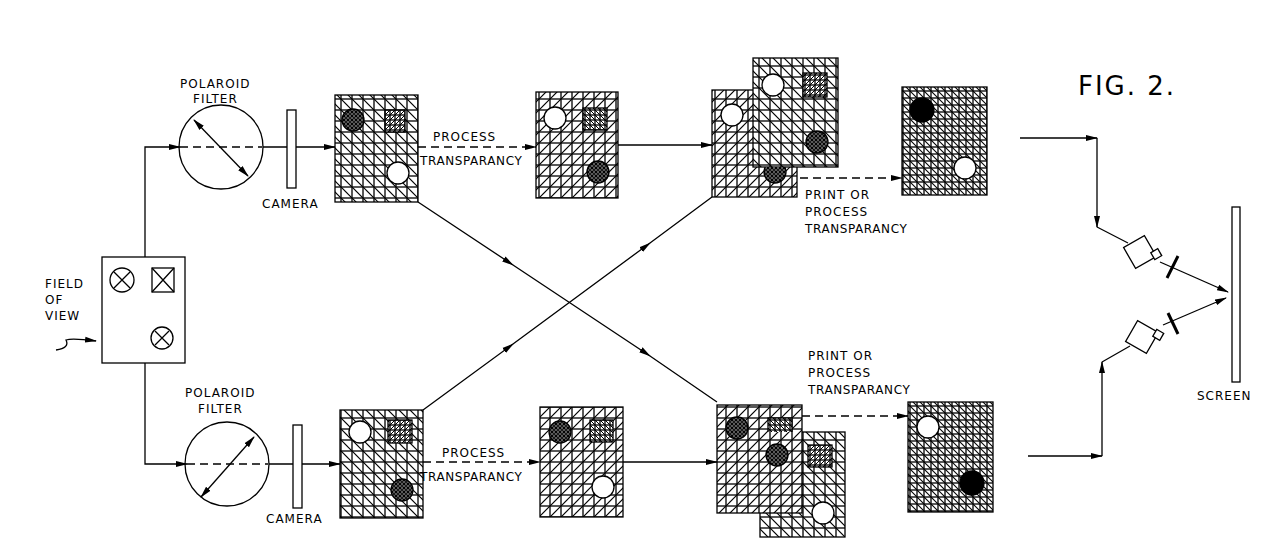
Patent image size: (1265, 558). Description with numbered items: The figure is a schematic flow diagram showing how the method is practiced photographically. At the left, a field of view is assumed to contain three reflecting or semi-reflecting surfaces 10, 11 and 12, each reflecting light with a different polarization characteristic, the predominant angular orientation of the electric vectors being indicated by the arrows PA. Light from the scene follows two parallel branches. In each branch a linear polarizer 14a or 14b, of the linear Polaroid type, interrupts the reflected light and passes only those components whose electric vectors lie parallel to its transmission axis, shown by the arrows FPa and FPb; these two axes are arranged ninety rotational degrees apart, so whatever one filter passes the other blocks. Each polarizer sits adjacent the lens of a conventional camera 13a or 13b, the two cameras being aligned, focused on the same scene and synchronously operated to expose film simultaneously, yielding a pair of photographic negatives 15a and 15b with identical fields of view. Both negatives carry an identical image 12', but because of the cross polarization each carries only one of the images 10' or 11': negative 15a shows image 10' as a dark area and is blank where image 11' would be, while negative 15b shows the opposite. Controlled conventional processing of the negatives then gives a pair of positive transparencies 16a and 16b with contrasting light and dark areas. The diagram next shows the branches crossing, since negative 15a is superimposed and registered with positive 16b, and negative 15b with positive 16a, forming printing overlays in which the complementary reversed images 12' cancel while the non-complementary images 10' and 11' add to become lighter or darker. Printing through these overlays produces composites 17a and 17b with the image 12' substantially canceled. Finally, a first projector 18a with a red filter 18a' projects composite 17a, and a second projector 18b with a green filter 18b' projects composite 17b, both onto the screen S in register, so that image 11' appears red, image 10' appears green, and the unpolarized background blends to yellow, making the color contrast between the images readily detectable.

The reflecting surface 10 is at (142, 293).
The reflecting surface 11 is at (183, 328).
The reflecting surface 12 is at (184, 278).
The predominant axis of polarization arrows PA is at (152, 336).
The axis of polarization of polarizer 14a FPa is at (181, 135).
The axis of polarization of polarizer 14b FPb is at (188, 492).
The camera 13a is at (291, 110).
The camera 13b is at (298, 425).
The linear polarizer 14a is at (212, 180).
The linear polarizer 14b is at (221, 498).
The photographic negative 15a is at (363, 200).
The photographic negative 15b is at (384, 412).
The positive transparency 16a is at (555, 176).
The positive transparency 16b is at (557, 493).
The composite 17a is at (965, 125).
The composite 17b is at (975, 432).
The first projector 18a is at (1173, 246).
The second projector 18b is at (1151, 327).
The red filter 18a' is at (1187, 253).
The green filter 18b' is at (1171, 347).
The screen S is at (1232, 208).
The image of surface 10 10' is at (666, 277).
The image of surface 11 11' is at (715, 327).
The image of surface 12 12' is at (608, 270).